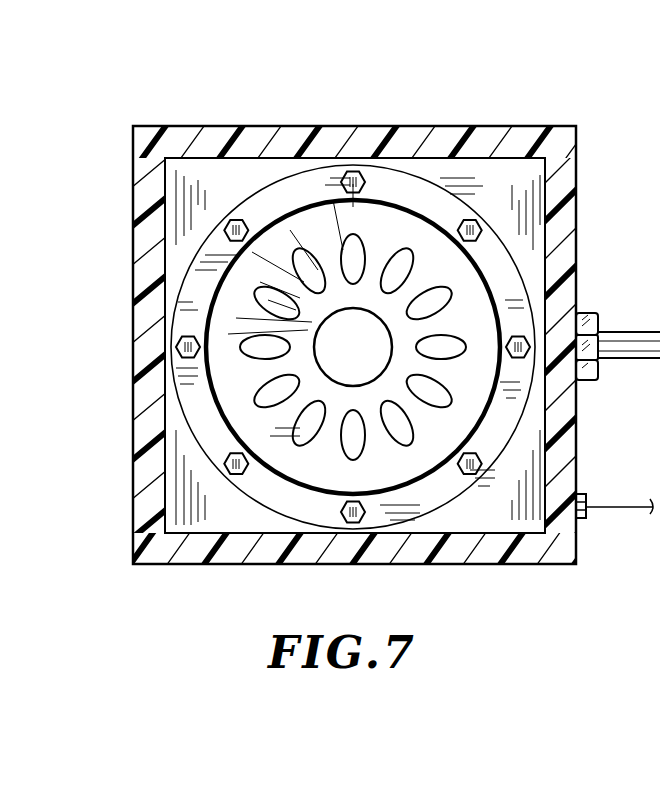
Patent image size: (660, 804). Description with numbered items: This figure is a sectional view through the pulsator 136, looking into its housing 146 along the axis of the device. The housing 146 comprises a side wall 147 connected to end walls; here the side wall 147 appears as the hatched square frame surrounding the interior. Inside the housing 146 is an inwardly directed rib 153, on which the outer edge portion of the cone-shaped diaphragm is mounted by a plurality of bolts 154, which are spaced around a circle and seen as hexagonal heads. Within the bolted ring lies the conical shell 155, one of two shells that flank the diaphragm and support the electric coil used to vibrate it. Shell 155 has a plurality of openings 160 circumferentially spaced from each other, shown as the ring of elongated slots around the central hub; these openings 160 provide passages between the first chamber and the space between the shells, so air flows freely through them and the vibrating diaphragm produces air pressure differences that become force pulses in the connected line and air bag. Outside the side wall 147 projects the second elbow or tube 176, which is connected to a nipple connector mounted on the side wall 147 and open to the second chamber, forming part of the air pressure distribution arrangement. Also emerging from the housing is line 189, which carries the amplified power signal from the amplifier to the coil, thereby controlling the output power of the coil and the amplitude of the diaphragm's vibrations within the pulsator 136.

The pulsator 136 is at (486, 110).
The housing 146 is at (118, 467).
The side wall 147 is at (562, 183).
The inwardly directed rib 153 is at (528, 482).
The bolts 154 is at (471, 241).
The conical shell 155 is at (472, 405).
The openings 160 is at (285, 305).
The second elbow or tube 176 is at (628, 342).
The line 189 is at (621, 508).